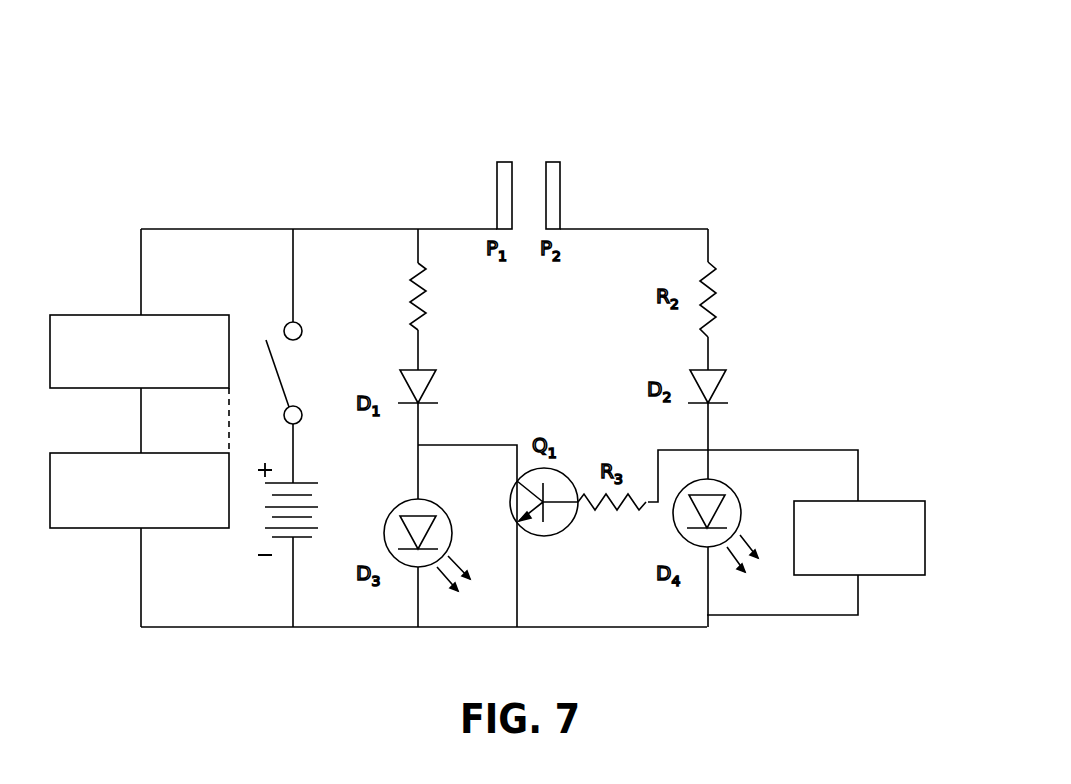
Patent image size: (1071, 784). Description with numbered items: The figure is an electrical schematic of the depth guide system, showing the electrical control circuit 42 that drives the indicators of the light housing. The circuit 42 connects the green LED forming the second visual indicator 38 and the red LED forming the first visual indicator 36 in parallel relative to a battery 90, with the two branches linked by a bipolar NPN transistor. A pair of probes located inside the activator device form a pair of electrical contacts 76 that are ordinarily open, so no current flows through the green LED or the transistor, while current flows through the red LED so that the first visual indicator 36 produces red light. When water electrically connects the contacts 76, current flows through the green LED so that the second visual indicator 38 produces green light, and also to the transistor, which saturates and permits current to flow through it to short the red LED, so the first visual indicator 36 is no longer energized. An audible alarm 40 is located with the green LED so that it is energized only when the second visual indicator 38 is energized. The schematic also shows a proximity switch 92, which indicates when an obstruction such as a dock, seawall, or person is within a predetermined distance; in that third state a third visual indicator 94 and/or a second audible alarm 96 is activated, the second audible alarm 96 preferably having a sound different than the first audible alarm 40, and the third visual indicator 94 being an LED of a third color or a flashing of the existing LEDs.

The electrical control circuit 42 is at (712, 108).
The electrical contact 76 is at (494, 170).
The proximity switch 92 is at (82, 313).
The third visual indicator 94 is at (137, 462).
The second audible alarm 96 is at (82, 452).
The battery 90 is at (300, 540).
The first visual indicator 36 is at (388, 509).
The second visual indicator 38 is at (736, 488).
The audible alarm 40 is at (898, 500).